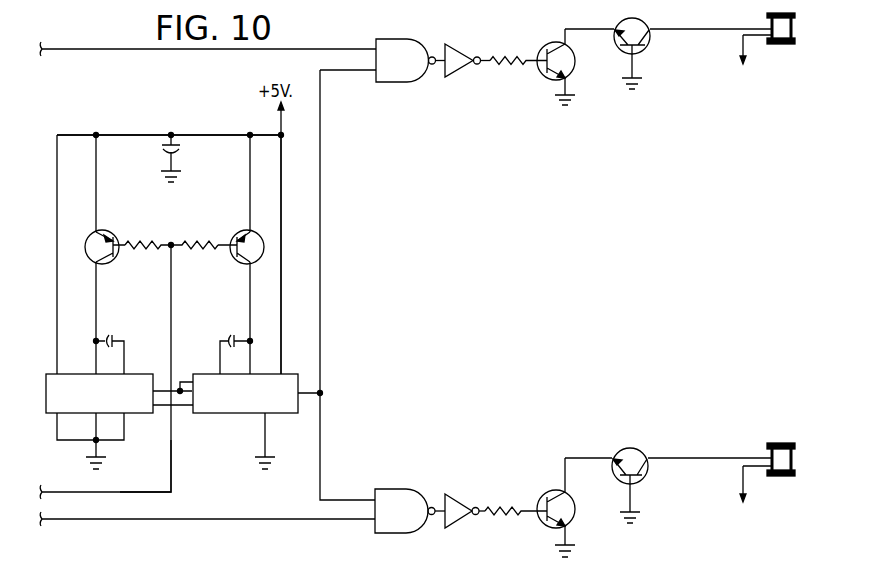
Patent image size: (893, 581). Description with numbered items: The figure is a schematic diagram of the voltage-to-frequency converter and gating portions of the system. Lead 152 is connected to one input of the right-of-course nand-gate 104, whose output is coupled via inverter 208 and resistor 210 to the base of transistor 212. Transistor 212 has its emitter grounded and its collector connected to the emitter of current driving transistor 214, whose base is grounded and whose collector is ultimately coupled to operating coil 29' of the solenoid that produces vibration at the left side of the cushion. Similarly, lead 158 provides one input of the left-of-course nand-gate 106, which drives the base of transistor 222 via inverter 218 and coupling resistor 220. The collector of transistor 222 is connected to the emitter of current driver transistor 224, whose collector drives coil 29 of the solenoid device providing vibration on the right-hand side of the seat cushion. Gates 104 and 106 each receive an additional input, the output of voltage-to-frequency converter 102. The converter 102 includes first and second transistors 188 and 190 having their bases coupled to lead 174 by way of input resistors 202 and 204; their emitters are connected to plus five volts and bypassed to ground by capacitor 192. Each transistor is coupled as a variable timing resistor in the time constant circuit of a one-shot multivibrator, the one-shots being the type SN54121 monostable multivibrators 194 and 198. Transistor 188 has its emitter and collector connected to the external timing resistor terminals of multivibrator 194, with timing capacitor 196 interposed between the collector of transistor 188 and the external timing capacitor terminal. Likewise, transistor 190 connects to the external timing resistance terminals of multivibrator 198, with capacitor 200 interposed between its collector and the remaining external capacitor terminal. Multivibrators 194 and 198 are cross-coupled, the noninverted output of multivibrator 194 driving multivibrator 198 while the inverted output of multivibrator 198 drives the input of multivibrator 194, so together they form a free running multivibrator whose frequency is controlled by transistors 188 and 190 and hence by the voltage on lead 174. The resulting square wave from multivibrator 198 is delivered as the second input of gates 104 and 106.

The lead 152 is at (50, 48).
The lead 158 is at (78, 520).
The lead 174 is at (172, 443).
The voltage-to-frequency converter 102 is at (192, 235).
The nand-gate 104 is at (394, 38).
The nand-gate 106 is at (367, 489).
The first transistor 188 is at (111, 220).
The second transistor 190 is at (241, 228).
The capacitor 192 is at (182, 151).
The monostable multivibrator 194 is at (47, 372).
The timing capacitor 196 is at (106, 334).
The monostable multivibrator 198 is at (290, 373).
The capacitor 200 is at (233, 334).
The input resistor 202 is at (138, 256).
The input resistor 204 is at (200, 256).
The inverter 208 is at (463, 44).
The resistor 210 is at (508, 55).
The transistor 212 is at (547, 40).
The current driving transistor 214 is at (640, 17).
The inverter 218 is at (468, 497).
The coupling resistor 220 is at (503, 500).
The transistor 222 is at (543, 528).
The current driver transistor 224 is at (635, 447).
The coil 29 is at (761, 468).
The operating coil 29' is at (756, 47).